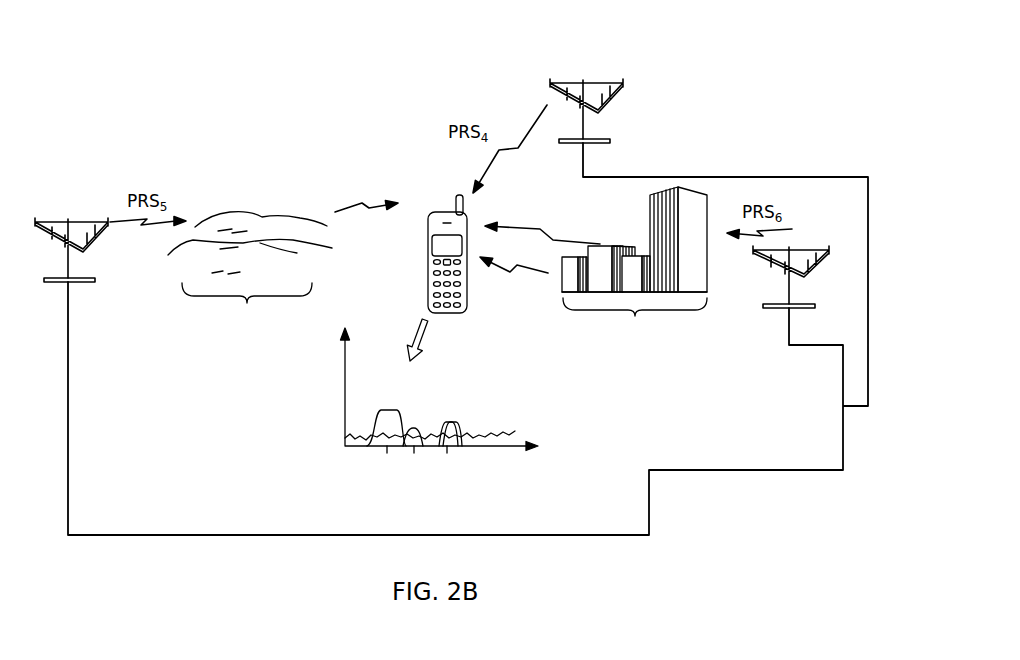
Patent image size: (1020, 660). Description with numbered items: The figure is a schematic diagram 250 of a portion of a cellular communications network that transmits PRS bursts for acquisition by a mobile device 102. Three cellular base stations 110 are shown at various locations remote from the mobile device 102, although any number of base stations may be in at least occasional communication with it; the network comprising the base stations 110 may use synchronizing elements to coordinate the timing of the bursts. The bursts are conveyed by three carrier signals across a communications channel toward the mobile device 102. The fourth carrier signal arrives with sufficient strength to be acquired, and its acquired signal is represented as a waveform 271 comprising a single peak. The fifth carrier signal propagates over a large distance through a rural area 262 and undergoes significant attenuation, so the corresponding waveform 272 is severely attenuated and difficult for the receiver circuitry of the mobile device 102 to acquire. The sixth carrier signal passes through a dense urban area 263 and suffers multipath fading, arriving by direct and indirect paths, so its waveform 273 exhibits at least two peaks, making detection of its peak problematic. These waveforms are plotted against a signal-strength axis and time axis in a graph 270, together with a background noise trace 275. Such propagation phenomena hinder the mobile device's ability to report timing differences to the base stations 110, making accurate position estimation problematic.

The schematic diagram 250 is at (154, 100).
The cellular base station 110 is at (600, 83).
The mobile device 102 is at (452, 314).
The rural area 262 is at (250, 280).
The urban area 263 is at (634, 274).
The signal strength graph 270 is at (345, 452).
The waveform 271 is at (386, 409).
The waveform 272 is at (413, 428).
The waveform 273 is at (457, 422).
The noise floor 275 is at (505, 430).